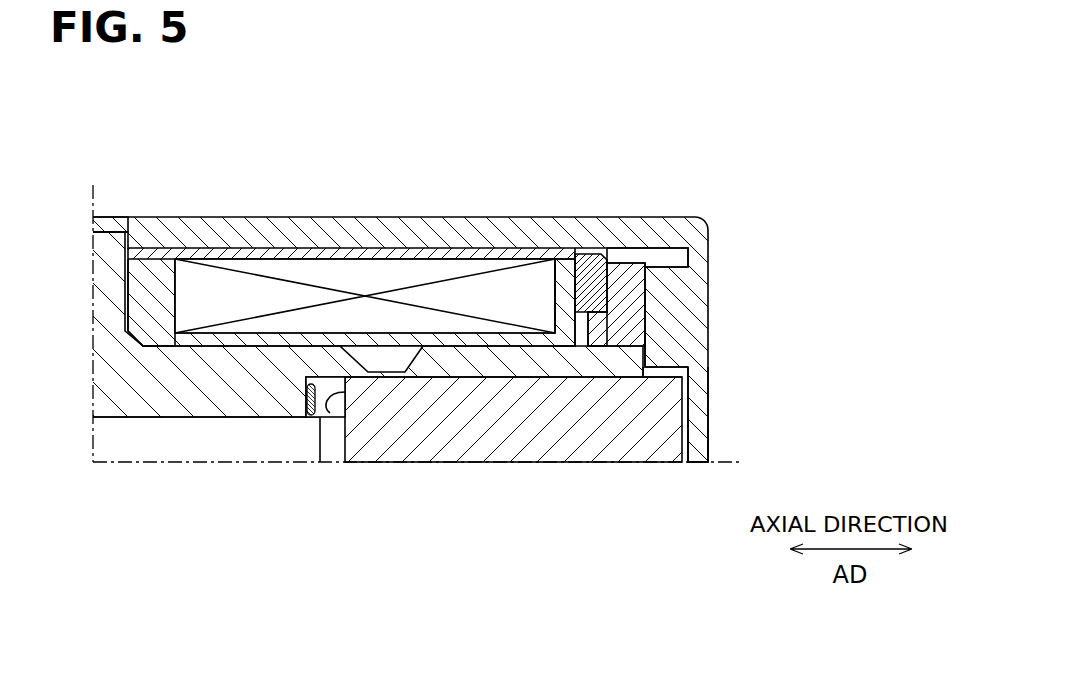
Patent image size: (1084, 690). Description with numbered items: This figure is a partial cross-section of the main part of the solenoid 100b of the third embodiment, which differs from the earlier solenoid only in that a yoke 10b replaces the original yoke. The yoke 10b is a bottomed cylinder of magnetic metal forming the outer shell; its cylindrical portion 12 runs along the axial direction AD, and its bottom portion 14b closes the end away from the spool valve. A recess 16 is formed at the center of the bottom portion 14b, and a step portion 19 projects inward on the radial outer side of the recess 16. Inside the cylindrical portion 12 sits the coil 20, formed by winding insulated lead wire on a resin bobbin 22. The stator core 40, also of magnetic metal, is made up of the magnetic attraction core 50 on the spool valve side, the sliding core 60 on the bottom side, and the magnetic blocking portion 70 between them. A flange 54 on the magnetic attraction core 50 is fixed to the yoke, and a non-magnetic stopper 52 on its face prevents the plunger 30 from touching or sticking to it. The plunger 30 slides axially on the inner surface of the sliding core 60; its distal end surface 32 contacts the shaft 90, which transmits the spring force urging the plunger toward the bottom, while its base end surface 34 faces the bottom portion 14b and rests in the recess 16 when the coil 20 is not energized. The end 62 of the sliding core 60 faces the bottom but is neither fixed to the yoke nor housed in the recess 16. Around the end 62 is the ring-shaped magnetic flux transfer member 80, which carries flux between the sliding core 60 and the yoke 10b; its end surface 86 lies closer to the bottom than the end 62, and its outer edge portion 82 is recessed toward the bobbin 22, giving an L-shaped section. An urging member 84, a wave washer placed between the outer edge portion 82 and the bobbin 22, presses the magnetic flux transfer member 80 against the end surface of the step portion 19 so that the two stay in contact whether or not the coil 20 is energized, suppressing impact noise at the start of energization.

The solenoid 100b is at (793, 110).
The yoke 10b is at (710, 184).
The cylindrical portion 12 is at (178, 236).
The bottom portion 14b is at (690, 363).
The recess 16 is at (688, 411).
The step portion 19 is at (660, 345).
The coil 20 is at (241, 297).
The bobbin 22 is at (563, 262).
The plunger 30 is at (485, 440).
The distal end surface 32 is at (319, 417).
The base end surface 34 is at (690, 438).
The stator core 40 is at (293, 162).
The magnetic attraction core 50 is at (290, 385).
The stopper 52 is at (318, 424).
The flange 54 is at (106, 245).
The sliding core 60 is at (496, 363).
The end 62 is at (628, 363).
The magnetic blocking portion 70 is at (380, 348).
The magnetic flux transfer member 80 is at (650, 292).
The outer edge portion 82 is at (600, 267).
The urging member 84 is at (690, 278).
The end surface 86 is at (673, 312).
The shaft 90 is at (143, 433).